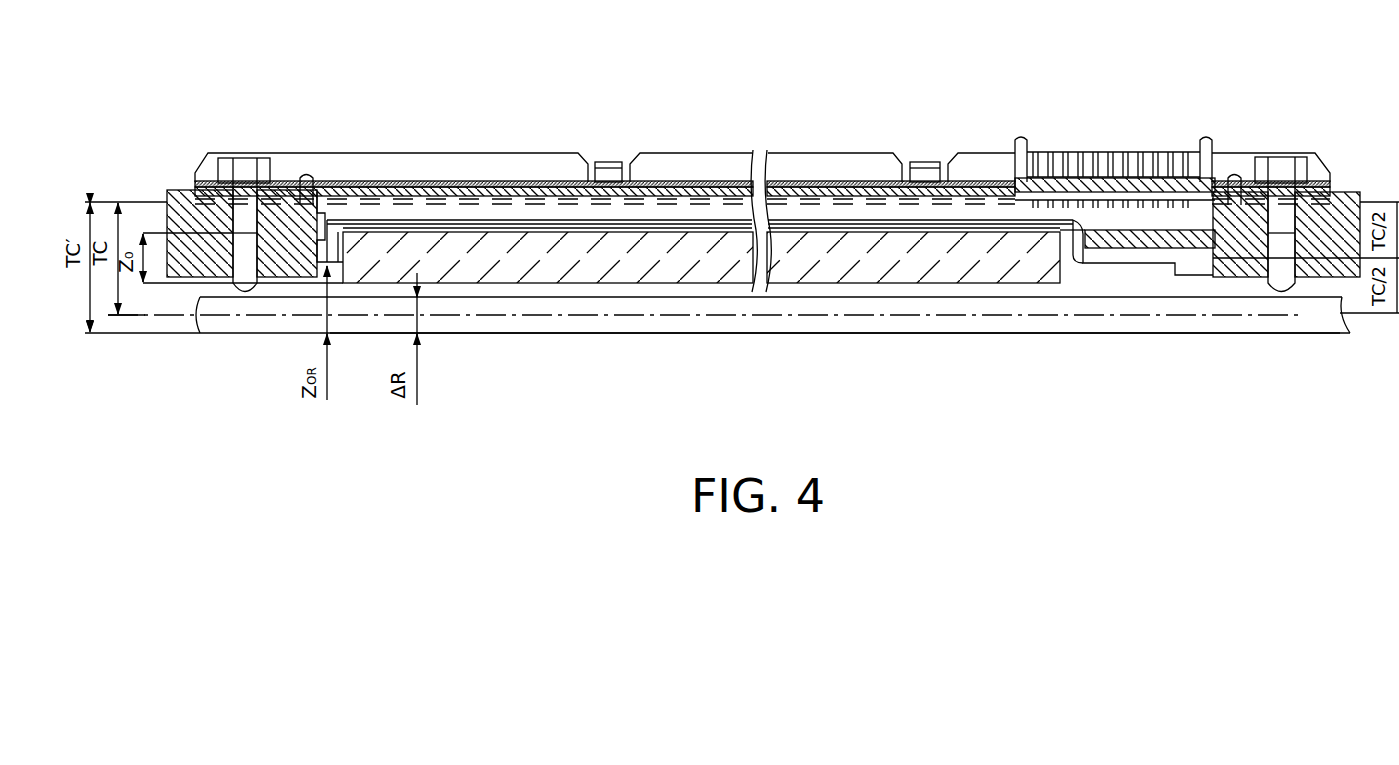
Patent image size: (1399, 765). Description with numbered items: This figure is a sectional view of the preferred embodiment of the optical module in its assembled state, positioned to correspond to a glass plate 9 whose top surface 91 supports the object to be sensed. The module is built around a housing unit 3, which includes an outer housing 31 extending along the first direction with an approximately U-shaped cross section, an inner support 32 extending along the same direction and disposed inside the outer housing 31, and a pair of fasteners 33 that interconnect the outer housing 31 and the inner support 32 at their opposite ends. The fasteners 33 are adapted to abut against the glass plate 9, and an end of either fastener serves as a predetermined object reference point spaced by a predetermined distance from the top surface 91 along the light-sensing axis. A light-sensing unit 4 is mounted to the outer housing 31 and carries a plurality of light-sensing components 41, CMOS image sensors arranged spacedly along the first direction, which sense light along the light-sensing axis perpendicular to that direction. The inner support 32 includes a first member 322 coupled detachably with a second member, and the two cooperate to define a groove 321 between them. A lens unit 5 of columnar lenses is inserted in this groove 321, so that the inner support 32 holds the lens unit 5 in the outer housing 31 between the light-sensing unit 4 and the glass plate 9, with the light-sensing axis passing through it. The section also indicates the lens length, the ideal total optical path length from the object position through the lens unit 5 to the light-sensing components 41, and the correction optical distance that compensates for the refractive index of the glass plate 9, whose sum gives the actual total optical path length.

The housing unit 3 is at (463, 151).
The outer housing 31 is at (800, 153).
The inner support 32 is at (1343, 189).
The groove 321 is at (688, 222).
The first member 322 is at (1128, 242).
The fasteners 33 is at (240, 294).
The light-sensing unit 4 is at (844, 181).
The light-sensing components 41 is at (546, 207).
The lens unit 5 is at (572, 285).
The glass plate 9 is at (1045, 335).
The top surface 91 is at (978, 334).